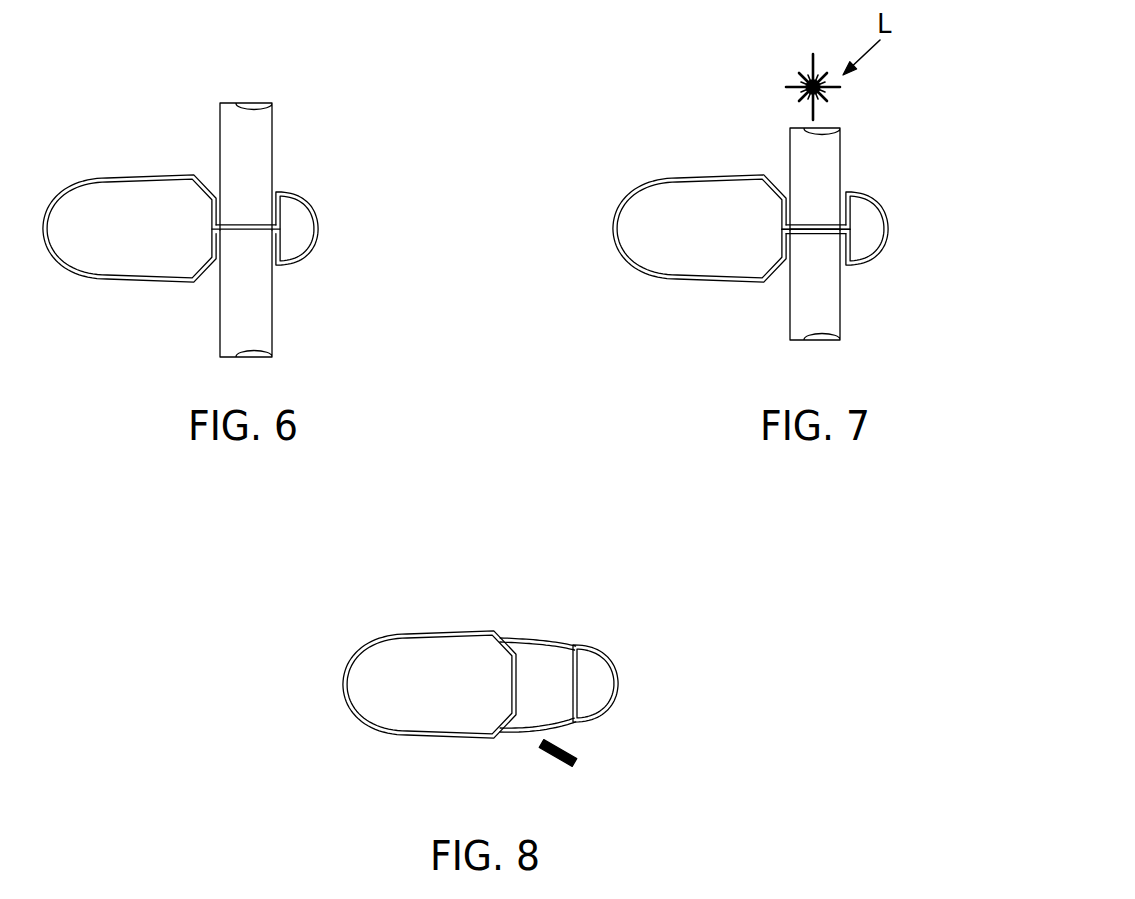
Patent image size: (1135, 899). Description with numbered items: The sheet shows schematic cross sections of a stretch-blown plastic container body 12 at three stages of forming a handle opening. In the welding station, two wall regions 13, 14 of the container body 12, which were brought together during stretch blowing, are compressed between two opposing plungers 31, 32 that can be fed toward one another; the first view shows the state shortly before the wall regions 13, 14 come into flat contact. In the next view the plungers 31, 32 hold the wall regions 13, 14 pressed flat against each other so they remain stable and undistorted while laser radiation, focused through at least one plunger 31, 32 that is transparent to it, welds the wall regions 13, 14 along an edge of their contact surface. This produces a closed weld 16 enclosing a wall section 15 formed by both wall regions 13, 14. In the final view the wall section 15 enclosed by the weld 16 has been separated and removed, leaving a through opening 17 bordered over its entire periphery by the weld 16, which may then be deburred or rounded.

In FIG. 6, the container body 12 is at (108, 178).
In FIG. 7, the container body 12 is at (678, 178).
In FIG. 8, the container body 12 is at (408, 636).
In FIG. 6, the wall region 13 is at (282, 269).
In FIG. 7, the wall region 13 is at (852, 269).
In FIG. 6, the wall region 14 is at (282, 269).
In FIG. 7, the wall region 14 is at (852, 269).
In FIG. 7, the wall section 15 is at (808, 233).
In FIG. 8, the wall section 15 is at (547, 762).
In FIG. 7, the weld 16 is at (848, 218).
In FIG. 8, the weld 16 is at (519, 685).
In FIG. 8, the through opening 17 is at (572, 670).
In FIG. 6, the plunger 31 is at (238, 117).
In FIG. 7, the plunger 31 is at (803, 148).
In FIG. 6, the plunger 32 is at (235, 330).
In FIG. 7, the plunger 32 is at (827, 322).